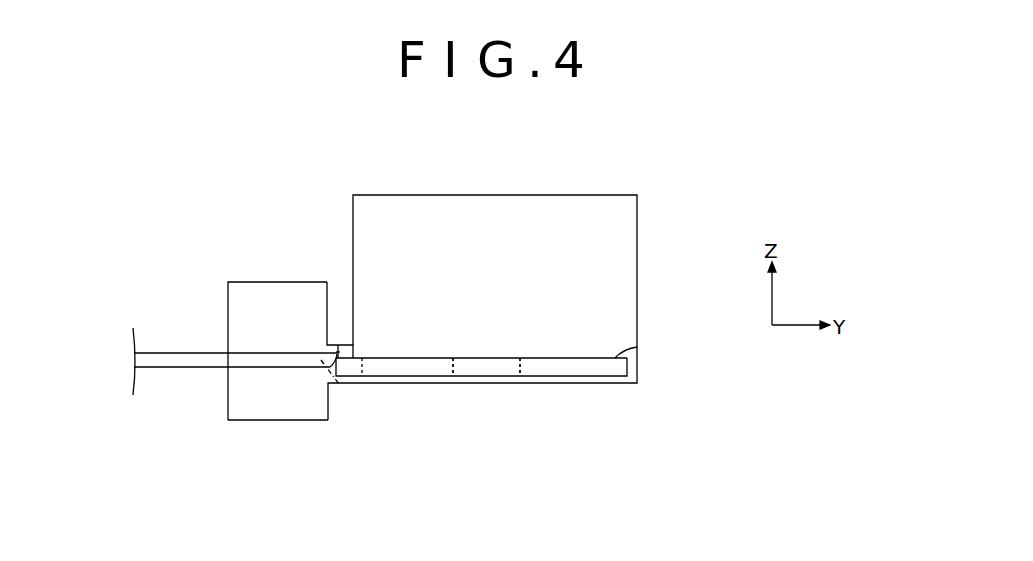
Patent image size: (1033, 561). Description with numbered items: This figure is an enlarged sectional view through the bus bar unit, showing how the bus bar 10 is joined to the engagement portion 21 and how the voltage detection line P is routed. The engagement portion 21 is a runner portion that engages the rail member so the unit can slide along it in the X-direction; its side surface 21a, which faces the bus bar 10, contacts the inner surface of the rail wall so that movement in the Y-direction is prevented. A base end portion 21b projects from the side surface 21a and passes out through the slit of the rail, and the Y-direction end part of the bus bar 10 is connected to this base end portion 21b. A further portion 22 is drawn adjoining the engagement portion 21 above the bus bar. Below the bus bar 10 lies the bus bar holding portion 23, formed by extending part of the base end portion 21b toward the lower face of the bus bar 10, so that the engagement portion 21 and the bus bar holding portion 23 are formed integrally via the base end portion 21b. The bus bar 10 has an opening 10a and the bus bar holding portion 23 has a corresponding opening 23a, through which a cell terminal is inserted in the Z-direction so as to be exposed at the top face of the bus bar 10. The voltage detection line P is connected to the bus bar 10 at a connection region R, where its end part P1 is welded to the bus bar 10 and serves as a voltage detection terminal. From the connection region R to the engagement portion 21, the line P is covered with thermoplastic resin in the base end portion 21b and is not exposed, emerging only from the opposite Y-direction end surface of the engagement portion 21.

The bus bar 10 is at (577, 357).
The opening 10a is at (457, 424).
The engagement portion 21 is at (257, 300).
The side surface 21a is at (331, 293).
The base end portion 21b is at (348, 344).
The housing / frame 22 is at (605, 193).
The bus bar holding portion 23 is at (587, 378).
The opening 23a is at (584, 436).
The voltage detection line P is at (190, 353).
The end part P1 is at (338, 345).
The connection region R is at (356, 380).